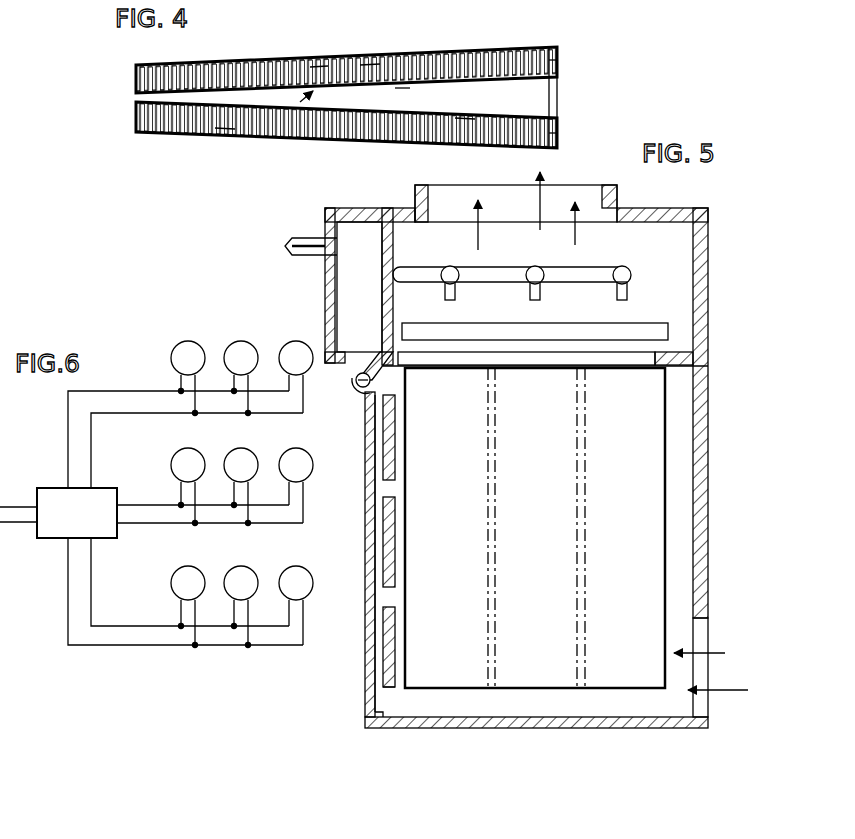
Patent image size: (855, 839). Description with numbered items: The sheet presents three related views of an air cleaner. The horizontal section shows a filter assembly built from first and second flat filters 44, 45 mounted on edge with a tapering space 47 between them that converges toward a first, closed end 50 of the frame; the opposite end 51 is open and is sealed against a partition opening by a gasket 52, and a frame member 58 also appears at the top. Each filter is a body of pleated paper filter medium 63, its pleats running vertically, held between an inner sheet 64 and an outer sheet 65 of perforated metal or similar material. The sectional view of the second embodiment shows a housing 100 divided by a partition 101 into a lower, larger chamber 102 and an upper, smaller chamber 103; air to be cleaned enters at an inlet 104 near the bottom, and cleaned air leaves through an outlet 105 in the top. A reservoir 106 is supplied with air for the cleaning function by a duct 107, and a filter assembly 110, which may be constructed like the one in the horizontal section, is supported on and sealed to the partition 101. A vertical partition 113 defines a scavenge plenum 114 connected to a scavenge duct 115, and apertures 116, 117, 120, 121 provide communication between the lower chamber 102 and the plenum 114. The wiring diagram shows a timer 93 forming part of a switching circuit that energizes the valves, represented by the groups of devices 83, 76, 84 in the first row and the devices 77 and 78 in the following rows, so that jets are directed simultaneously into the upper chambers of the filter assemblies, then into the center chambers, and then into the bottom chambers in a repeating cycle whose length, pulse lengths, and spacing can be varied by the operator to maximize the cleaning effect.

In FIG. 4, the first flat filter 44 is at (423, 63).
In FIG. 4, the second flat filter 45 is at (438, 150).
In FIG. 4, the tapering space 47 is at (290, 132).
In FIG. 4, the first, closed end 50 is at (137, 108).
In FIG. 4, the opposite end 51 is at (558, 68).
In FIG. 4, the gasket 52 is at (558, 132).
In FIG. 4, the filter frame 58 is at (343, 5).
In FIG. 4, the pleated paper filter medium 63 is at (378, 58).
In FIG. 4, the inner sheet 64 is at (401, 89).
In FIG. 4, the outer sheet 65 is at (319, 66).
In FIG. 6, the lamp 76 is at (233, 343).
In FIG. 6, the lamp 77 is at (249, 445).
In FIG. 6, the lamp 78 is at (249, 562).
In FIG. 6, the lamp 83 is at (182, 343).
In FIG. 6, the lamp 84 is at (296, 336).
In FIG. 6, the timer 93 is at (55, 540).
In FIG. 5, the housing 100 is at (742, 556).
In FIG. 5, the partition 101 is at (670, 356).
In FIG. 5, the lower chamber 102 is at (677, 462).
In FIG. 5, the upper chamber 103 is at (668, 252).
In FIG. 5, the inlet 104 is at (706, 646).
In FIG. 5, the outlet 105 is at (588, 193).
In FIG. 5, the reservoir 106 is at (355, 236).
In FIG. 5, the duct 107 is at (302, 238).
In FIG. 5, the filter assembly 110 is at (543, 412).
In FIG. 5, the vertical partition 113 is at (395, 641).
In FIG. 5, the scavenge plenum 114 is at (381, 617).
In FIG. 5, the scavenge duct 115 is at (356, 380).
In FIG. 5, the aperture 116 is at (366, 396).
In FIG. 5, the aperture 117 is at (394, 491).
In FIG. 5, the aperture 120 is at (394, 600).
In FIG. 5, the aperture 121 is at (390, 701).